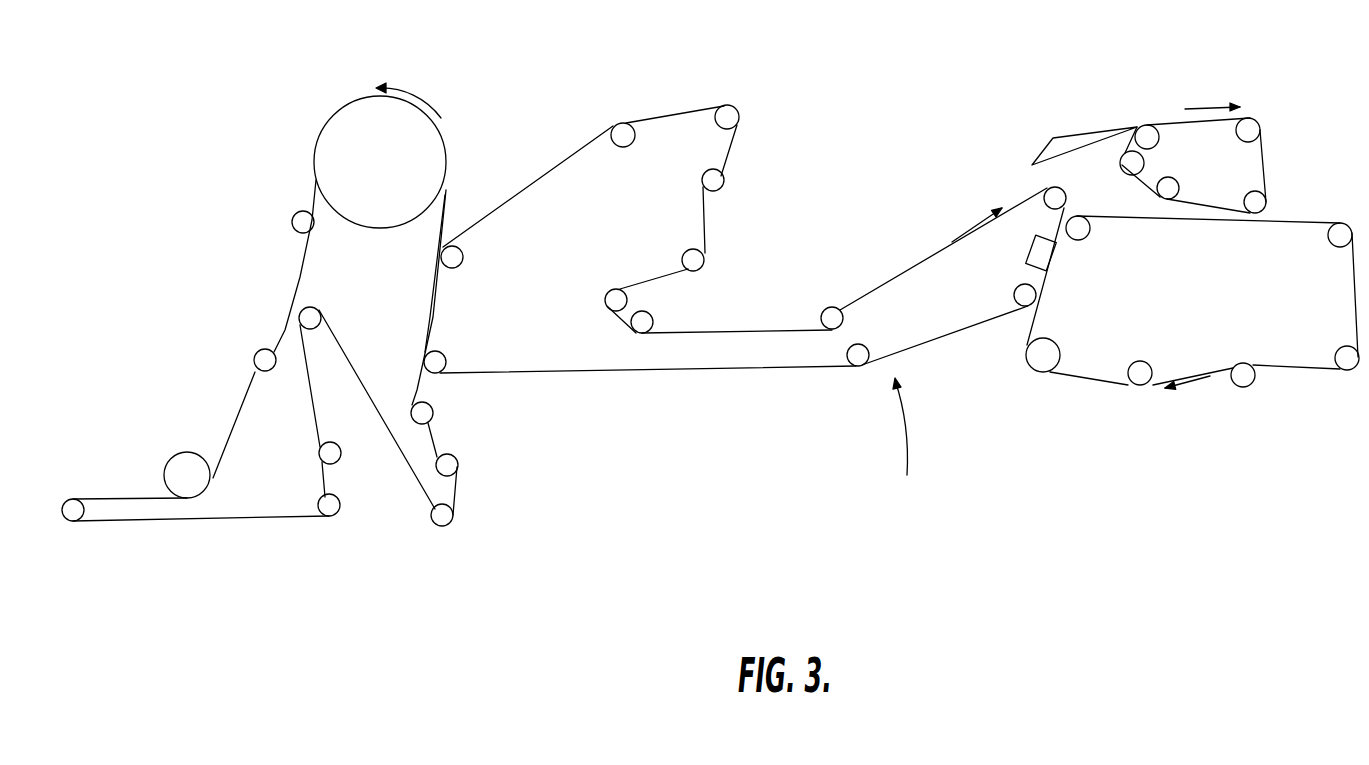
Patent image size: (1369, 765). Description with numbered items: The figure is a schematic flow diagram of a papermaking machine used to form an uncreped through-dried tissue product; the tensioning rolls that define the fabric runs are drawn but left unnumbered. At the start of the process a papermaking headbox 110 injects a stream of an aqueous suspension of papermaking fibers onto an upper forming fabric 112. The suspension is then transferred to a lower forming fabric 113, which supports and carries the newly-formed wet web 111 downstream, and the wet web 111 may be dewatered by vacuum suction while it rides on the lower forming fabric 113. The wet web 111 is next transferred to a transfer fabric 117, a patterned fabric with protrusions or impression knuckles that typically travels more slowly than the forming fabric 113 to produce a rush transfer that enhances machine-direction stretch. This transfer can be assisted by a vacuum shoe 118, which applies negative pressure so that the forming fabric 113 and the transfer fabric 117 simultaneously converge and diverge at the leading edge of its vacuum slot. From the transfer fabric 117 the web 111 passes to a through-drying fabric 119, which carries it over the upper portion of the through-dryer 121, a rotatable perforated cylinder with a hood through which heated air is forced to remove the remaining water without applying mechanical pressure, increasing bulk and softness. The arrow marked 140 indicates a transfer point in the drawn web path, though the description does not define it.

The papermaking headbox 110 is at (1078, 130).
The wet web 111 is at (300, 278).
The upper forming fabric 112 is at (1267, 165).
The lower forming fabric 113 is at (1092, 378).
The transfer fabric 117 is at (745, 330).
The vacuum shoe 118 is at (1043, 253).
The through-drying fabric 119 is at (437, 443).
The through-dryer 121 is at (333, 138).
The transfer point 140 is at (903, 445).